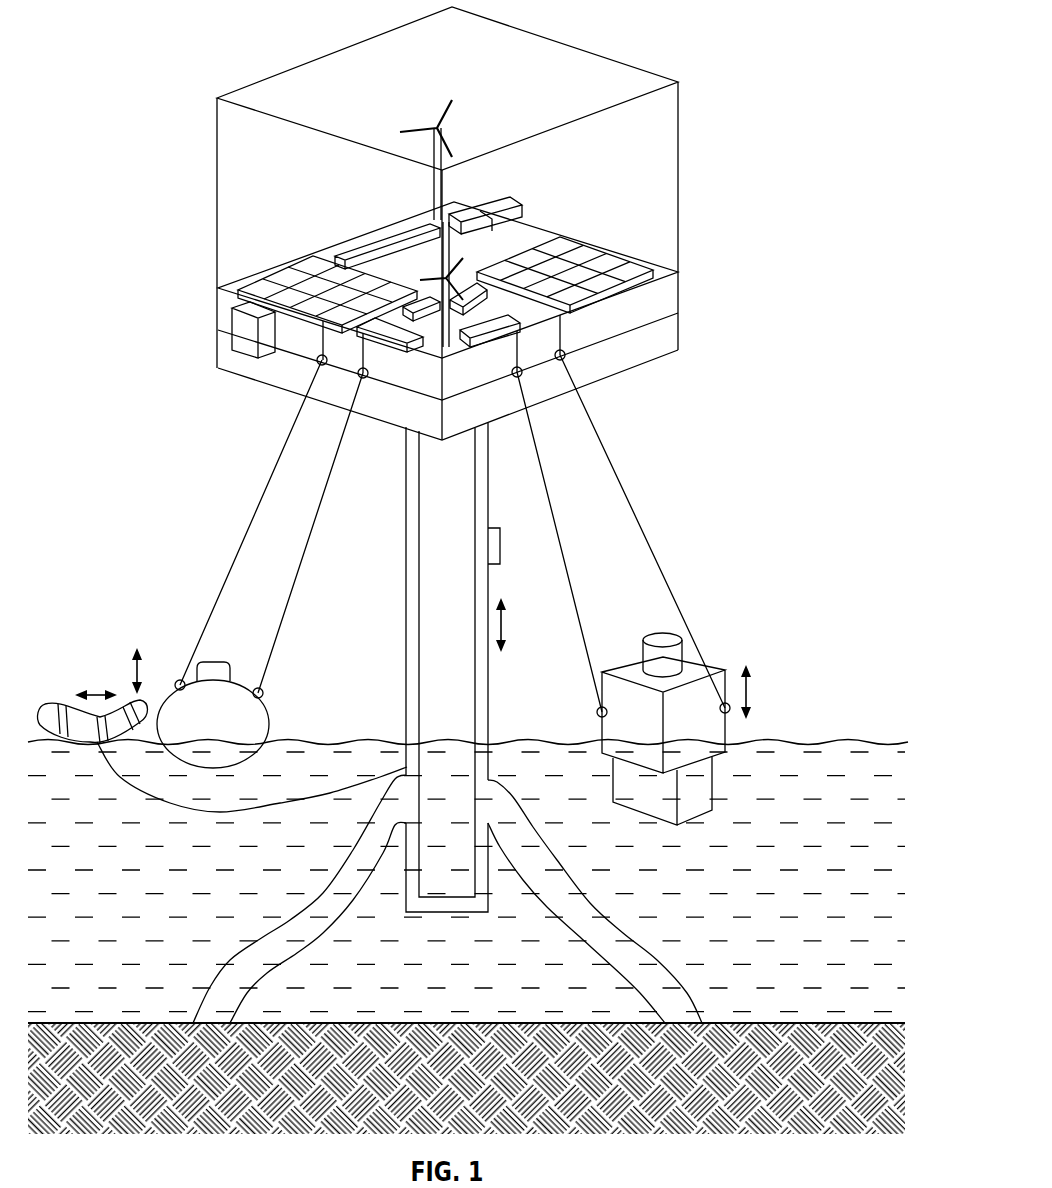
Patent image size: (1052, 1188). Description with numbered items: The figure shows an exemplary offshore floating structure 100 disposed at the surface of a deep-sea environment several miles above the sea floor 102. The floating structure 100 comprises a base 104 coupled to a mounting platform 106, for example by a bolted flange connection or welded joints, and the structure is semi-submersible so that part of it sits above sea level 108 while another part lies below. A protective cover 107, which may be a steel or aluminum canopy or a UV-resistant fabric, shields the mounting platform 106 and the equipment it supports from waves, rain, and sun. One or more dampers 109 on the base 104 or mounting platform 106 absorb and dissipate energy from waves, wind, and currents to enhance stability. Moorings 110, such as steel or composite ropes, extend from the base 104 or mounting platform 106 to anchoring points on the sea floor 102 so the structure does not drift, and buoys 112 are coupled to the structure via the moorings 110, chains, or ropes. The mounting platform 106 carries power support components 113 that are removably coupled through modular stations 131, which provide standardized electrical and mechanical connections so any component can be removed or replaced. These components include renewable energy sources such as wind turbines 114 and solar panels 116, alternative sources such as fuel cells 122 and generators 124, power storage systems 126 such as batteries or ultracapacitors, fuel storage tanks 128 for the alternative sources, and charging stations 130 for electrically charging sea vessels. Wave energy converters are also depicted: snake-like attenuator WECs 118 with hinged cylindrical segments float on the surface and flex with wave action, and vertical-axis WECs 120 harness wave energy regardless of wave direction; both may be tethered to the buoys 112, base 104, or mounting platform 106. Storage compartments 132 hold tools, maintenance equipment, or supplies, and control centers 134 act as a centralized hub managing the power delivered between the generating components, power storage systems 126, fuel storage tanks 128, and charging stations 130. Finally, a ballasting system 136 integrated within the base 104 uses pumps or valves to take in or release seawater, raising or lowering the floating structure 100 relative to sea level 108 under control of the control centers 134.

The floating structure 100 is at (178, 33).
The sea floor 102 is at (828, 1021).
The base 104 is at (406, 533).
The mounting platform 106 is at (678, 290).
The protective cover 107 is at (583, 47).
The sea level 108 is at (822, 736).
The dampers 109 is at (243, 340).
The moorings 110 is at (318, 795).
The buoys 112 is at (270, 718).
The power support components 113 is at (446, 113).
The wind turbines 114 is at (437, 157).
The solar panels 116 is at (587, 260).
The attenuator WECs 118 is at (52, 708).
The vertical-axis WECs 120 is at (703, 678).
The fuel cells 122 is at (390, 328).
The generators 124 is at (295, 300).
The power storage systems 126 is at (417, 307).
The fuel storage tanks 128 is at (463, 215).
The charging stations 130 is at (502, 220).
The modular stations 131 is at (647, 265).
The storage compartments 132 is at (563, 273).
The control centers 134 is at (556, 392).
The ballasting system 136 is at (436, 607).